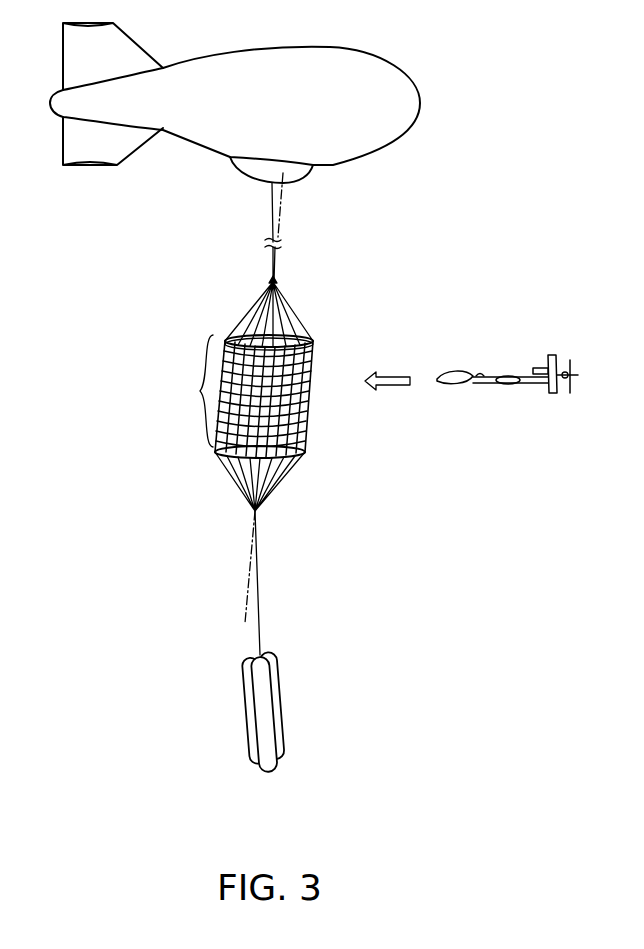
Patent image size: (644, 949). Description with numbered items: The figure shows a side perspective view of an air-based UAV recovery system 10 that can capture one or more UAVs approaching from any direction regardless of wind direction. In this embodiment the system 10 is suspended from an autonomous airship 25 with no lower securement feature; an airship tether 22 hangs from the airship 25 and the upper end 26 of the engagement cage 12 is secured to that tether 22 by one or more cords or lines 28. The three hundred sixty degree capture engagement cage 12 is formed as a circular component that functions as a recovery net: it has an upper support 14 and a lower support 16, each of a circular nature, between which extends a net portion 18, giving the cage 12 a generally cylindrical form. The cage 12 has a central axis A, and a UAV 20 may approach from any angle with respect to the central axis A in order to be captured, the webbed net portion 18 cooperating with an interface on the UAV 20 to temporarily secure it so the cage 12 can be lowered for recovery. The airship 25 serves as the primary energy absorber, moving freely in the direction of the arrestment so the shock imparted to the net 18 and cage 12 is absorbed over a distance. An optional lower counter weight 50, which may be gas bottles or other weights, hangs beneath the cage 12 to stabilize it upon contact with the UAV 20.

The UAV recovery system 10 is at (443, 273).
The 360 degree capture engagement cage 12 is at (242, 335).
The upper support 14 is at (320, 345).
The lower support 16 is at (307, 453).
The net portion 18 is at (192, 391).
The UAV 20 is at (493, 375).
The airship tether 22 is at (280, 218).
The autonomous airship 25 is at (293, 113).
The upper end 26 is at (282, 278).
The cords or lines 28 is at (297, 317).
The lower counter weight 50 is at (268, 718).
The central axis A is at (247, 605).